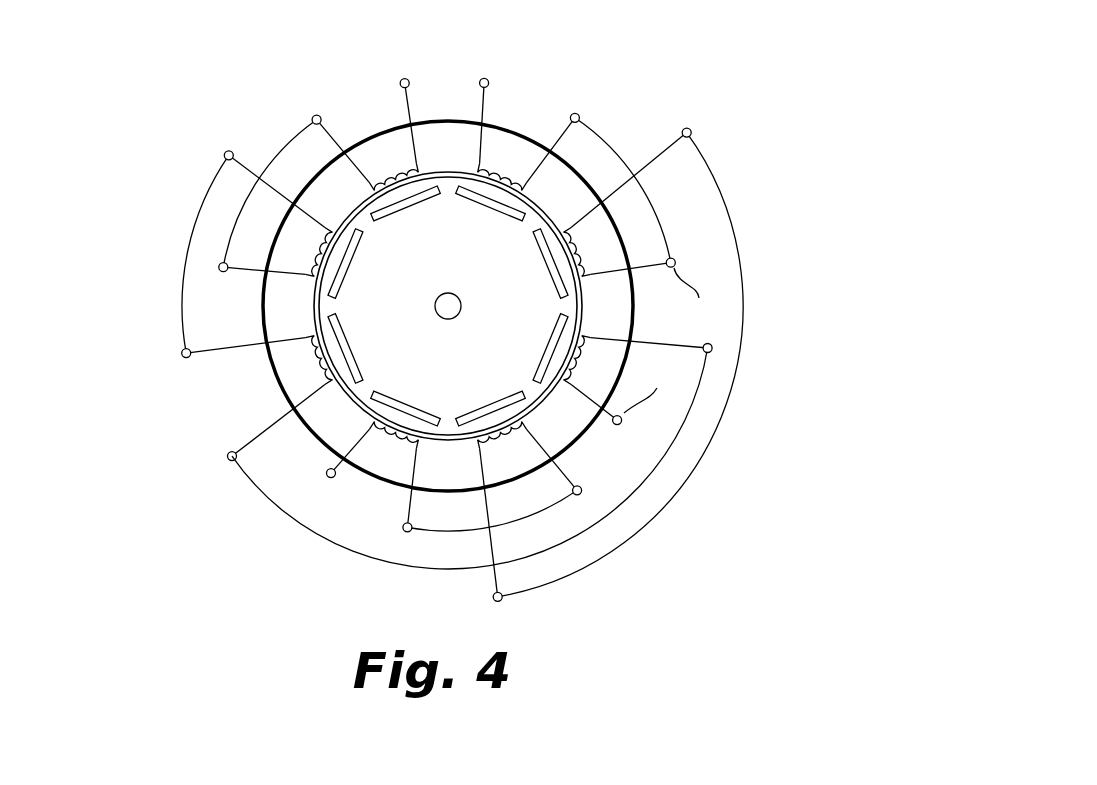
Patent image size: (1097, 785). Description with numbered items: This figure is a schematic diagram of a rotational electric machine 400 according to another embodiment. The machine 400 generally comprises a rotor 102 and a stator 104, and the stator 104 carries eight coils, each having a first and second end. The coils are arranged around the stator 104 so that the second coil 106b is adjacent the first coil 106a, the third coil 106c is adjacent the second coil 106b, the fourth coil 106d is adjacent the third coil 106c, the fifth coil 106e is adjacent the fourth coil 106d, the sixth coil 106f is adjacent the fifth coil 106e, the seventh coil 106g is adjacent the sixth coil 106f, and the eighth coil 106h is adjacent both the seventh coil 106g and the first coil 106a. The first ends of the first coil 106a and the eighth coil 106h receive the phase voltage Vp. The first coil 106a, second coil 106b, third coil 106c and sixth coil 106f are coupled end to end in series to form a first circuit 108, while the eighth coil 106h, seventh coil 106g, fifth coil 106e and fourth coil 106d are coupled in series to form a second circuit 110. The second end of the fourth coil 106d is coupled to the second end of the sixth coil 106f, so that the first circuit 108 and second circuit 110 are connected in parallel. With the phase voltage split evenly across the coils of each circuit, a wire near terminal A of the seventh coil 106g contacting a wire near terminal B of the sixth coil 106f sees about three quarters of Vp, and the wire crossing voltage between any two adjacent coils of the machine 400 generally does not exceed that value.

The rotational electric machine 400 is at (654, 36).
The stator 104 is at (443, 119).
The rotor 102 is at (395, 361).
The first coil 106a is at (420, 167).
The second coil 106b is at (327, 227).
The third coil 106c is at (309, 334).
The fourth coil 106d is at (368, 424).
The fifth coil 106e is at (470, 446).
The sixth coil 106f is at (563, 385).
The seventh coil 106g is at (586, 278).
The eighth coil 106h is at (529, 194).
The first circuit 108 is at (183, 262).
The second circuit 110 is at (742, 252).